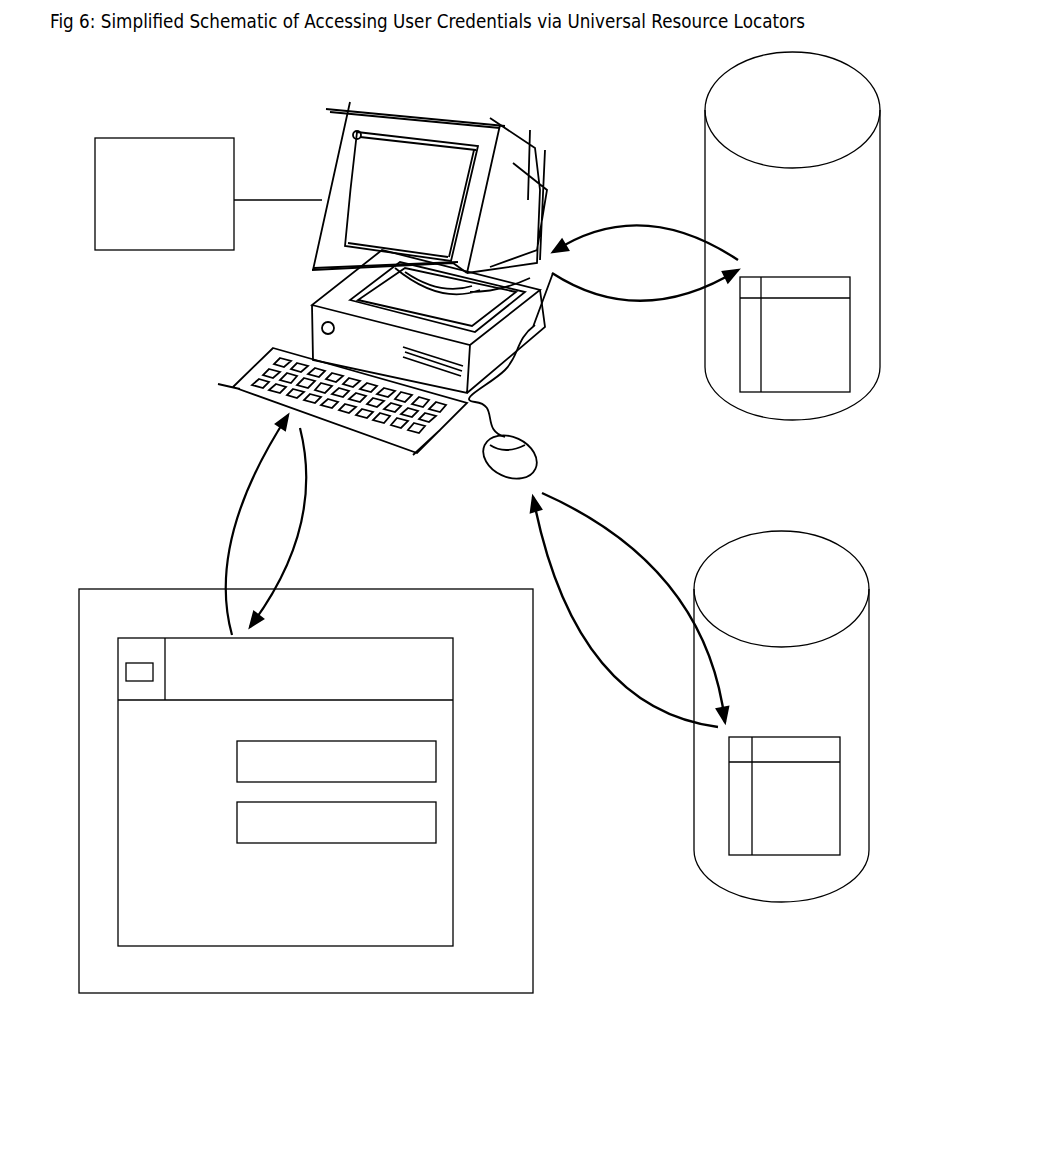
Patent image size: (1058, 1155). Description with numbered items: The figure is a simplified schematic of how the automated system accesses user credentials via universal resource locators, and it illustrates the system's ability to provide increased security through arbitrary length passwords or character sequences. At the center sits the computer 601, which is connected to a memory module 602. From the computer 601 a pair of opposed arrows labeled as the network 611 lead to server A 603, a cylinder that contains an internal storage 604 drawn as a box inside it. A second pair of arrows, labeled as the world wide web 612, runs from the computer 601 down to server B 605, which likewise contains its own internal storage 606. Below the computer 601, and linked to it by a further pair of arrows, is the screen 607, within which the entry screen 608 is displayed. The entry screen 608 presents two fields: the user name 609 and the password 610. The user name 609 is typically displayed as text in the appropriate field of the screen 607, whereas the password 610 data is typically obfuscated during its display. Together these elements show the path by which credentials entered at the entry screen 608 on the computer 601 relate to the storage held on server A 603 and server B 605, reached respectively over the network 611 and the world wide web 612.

The computer 601 is at (385, 278).
The memory module 602 is at (208, 180).
The server A 603 is at (790, 415).
The internal storage 604 is at (795, 334).
The server B 605 is at (788, 892).
The internal storage 606 is at (784, 796).
The screen 607 is at (342, 776).
The entry screen 608 is at (453, 668).
The user name 609 is at (336, 761).
The password 610 is at (336, 822).
The network 611 is at (645, 247).
The world wide web 612 is at (629, 598).